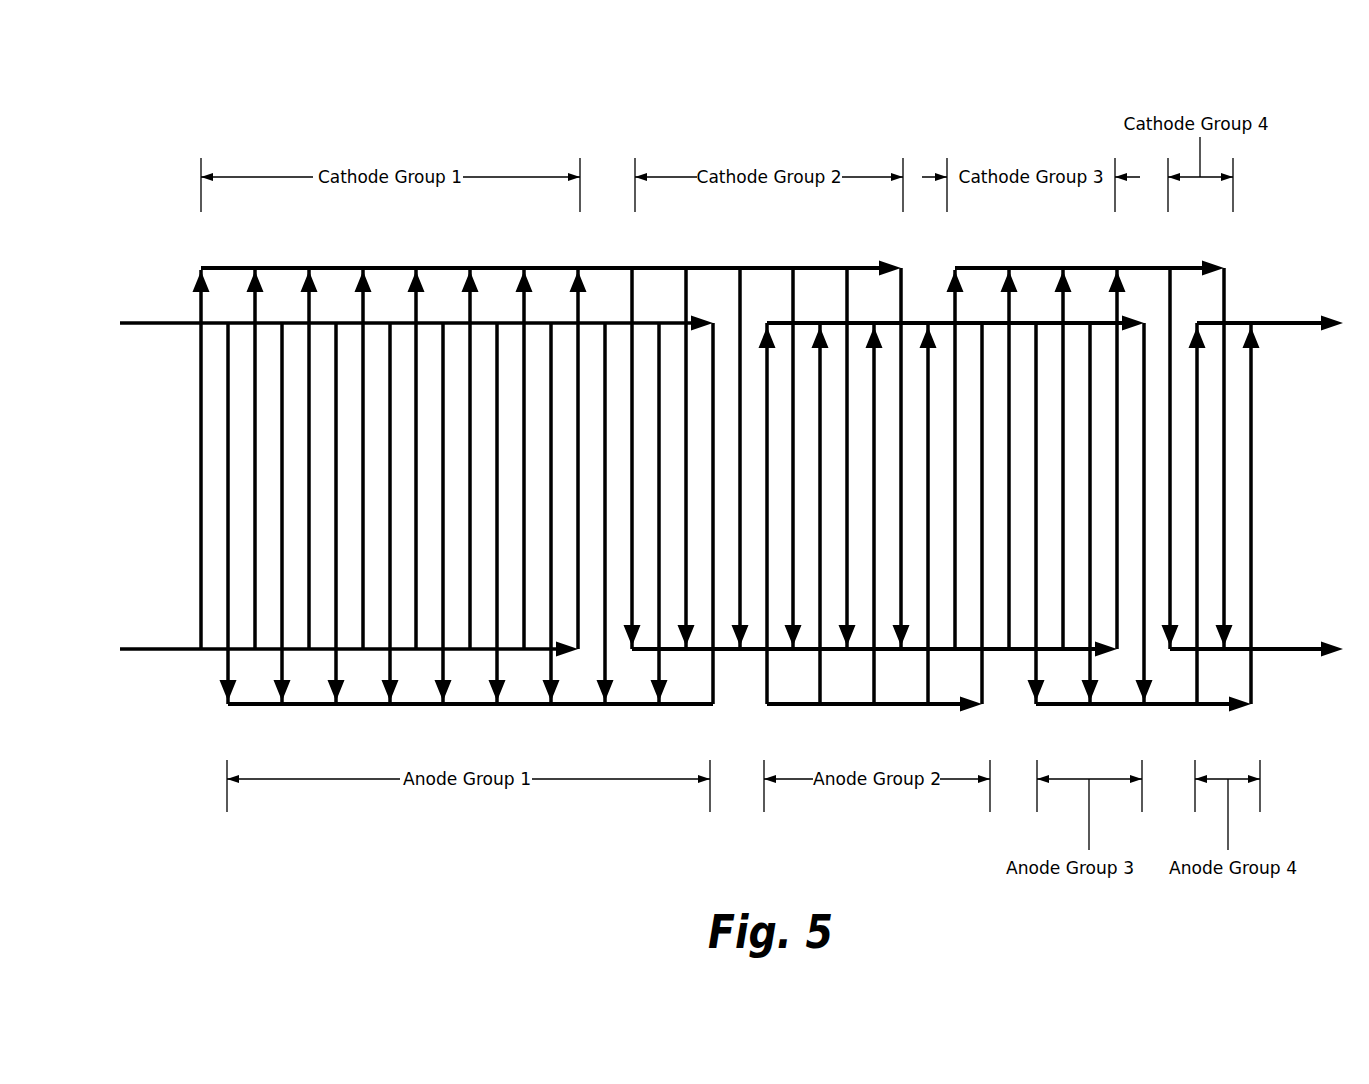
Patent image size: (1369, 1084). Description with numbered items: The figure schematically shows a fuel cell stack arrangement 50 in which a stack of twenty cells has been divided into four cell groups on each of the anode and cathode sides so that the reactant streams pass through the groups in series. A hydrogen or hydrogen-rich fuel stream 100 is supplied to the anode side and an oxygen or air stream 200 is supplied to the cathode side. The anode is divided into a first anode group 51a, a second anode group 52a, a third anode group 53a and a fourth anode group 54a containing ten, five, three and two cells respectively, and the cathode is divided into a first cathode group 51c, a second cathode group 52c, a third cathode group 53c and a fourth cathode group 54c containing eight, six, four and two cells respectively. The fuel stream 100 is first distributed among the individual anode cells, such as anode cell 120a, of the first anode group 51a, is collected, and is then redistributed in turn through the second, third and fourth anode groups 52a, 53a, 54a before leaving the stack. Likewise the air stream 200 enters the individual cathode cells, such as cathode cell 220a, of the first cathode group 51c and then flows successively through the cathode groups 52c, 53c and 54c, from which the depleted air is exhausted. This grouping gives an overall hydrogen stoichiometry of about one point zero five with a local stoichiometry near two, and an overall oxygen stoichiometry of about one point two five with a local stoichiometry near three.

The electrochemical cell electrode arrangement 50 is at (695, 130).
The hydrogen fuel stream 100 is at (149, 321).
The air stream 200 is at (158, 654).
The anode cell 120a is at (230, 430).
The cathode cell 220a is at (199, 539).
The first cathode group 51c is at (580, 395).
The second cathode group 52c is at (902, 395).
The third cathode group 53c is at (1118, 393).
The fourth cathode group 54c is at (1227, 393).
The first anode group 51a is at (706, 558).
The second anode group 52a is at (978, 558).
The third anode group 53a is at (1142, 560).
The fourth anode group 54a is at (1248, 560).